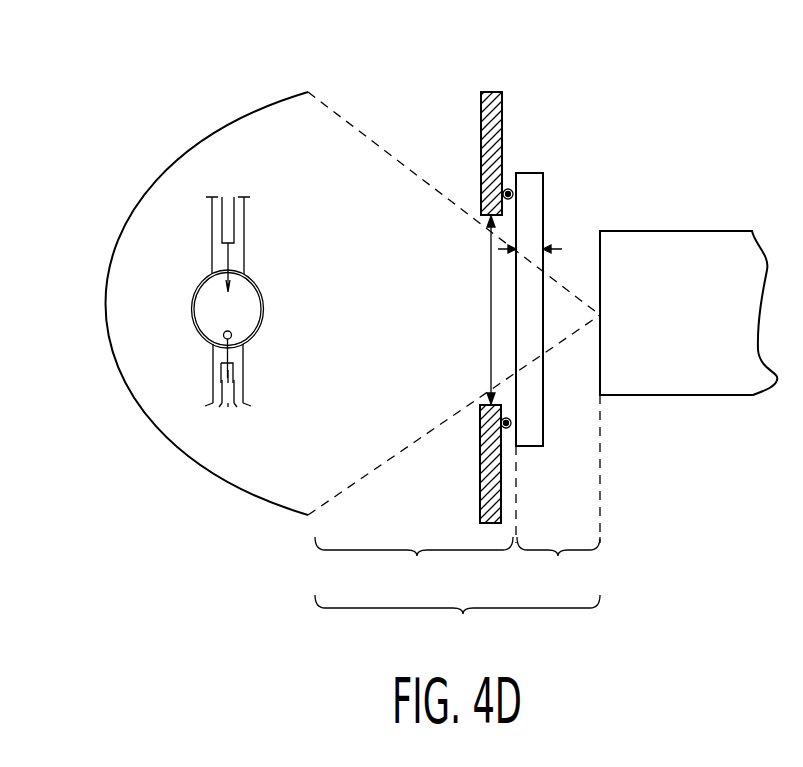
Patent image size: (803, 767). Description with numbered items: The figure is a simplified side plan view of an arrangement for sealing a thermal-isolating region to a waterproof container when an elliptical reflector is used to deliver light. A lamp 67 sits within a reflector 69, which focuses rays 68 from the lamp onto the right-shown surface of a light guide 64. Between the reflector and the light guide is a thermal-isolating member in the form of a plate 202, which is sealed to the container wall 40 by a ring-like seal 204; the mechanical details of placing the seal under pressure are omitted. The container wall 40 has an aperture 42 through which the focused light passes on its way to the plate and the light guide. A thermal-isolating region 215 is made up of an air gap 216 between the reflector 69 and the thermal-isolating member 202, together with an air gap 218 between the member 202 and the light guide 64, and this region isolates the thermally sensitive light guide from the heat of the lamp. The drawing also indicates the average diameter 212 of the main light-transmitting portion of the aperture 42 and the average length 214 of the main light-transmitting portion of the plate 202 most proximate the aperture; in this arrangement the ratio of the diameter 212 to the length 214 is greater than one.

The reflector 69 is at (230, 117).
The lamp 67 is at (206, 311).
The rays 68 is at (383, 146).
The container wall 40 is at (483, 132).
The aperture 42 is at (478, 404).
The plate 202 is at (543, 183).
The ring-like seal 204 is at (509, 189).
The average length of main light-transmitting portion of thermal-isolating member 214 is at (530, 248).
The average diameter of main light-transmitting portion of aperture 212 is at (490, 315).
The light guide 64 is at (697, 329).
The air gap 216 is at (414, 565).
The air gap 218 is at (558, 565).
The thermal-isolating region 215 is at (457, 622).